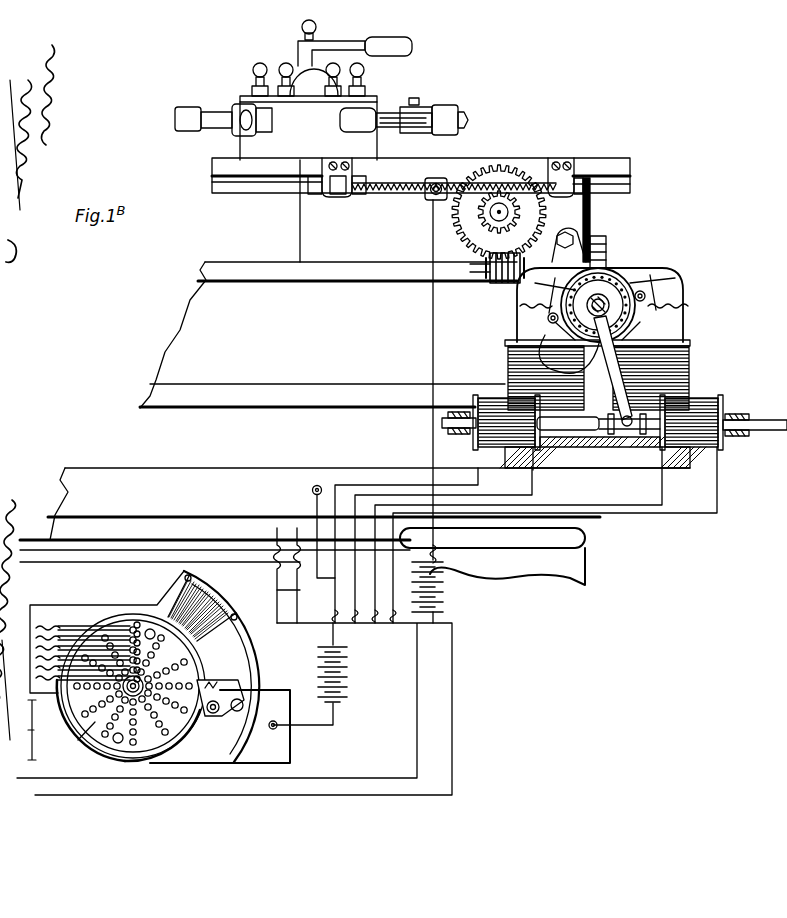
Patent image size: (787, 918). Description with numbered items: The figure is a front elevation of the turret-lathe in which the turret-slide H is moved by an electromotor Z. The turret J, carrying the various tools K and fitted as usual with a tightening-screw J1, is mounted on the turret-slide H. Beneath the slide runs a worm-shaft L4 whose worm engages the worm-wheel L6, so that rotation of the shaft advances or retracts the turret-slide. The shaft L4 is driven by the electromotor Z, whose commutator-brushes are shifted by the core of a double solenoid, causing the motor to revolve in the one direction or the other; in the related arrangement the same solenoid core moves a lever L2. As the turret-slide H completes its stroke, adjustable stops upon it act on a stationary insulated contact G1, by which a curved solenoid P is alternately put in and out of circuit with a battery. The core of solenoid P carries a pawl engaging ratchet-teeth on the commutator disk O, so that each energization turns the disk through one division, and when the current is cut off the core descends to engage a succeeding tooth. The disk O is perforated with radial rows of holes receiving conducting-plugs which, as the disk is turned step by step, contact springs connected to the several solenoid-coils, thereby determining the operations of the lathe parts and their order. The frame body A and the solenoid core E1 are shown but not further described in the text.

The tightening-screw J1 is at (355, 37).
The turret J is at (308, 111).
The tools K is at (222, 118).
The turret-slide H is at (356, 152).
The stationary insulated contact G1 is at (432, 180).
The lever L2 is at (555, 182).
The worm-wheel L6 is at (476, 228).
The worm-shaft L4 is at (572, 262).
The electromotor Z is at (597, 327).
The frame body A is at (328, 335).
The solenoid core E1 is at (612, 420).
The curved solenoid P is at (144, 666).
The commutator disk O is at (77, 741).